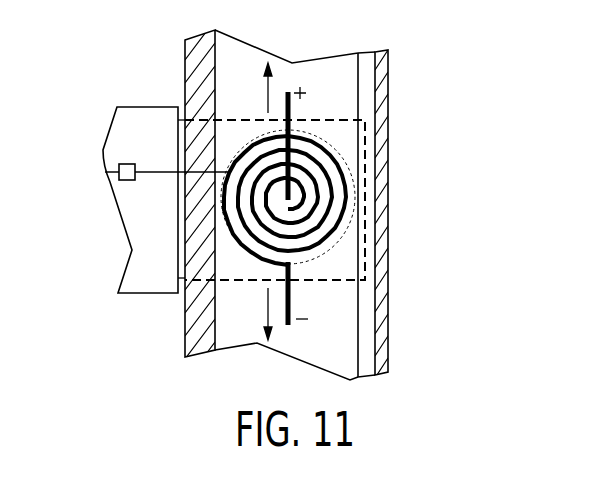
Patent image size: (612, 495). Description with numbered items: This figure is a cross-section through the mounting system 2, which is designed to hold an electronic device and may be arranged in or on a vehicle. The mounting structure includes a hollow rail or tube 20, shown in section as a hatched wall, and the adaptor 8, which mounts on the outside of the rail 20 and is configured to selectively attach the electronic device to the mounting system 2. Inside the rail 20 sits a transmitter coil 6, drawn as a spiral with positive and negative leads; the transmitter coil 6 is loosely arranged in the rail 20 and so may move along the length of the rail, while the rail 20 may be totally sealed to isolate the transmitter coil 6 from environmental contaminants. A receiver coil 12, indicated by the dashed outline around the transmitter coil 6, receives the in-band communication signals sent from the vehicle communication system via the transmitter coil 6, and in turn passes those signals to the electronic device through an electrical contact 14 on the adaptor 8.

The mounting system 2 is at (426, 105).
The transmitter coil 6 is at (330, 172).
The adaptor 8 is at (148, 126).
The receiver coil 12 is at (316, 259).
The electrical contact 14 is at (128, 182).
The rail 20 is at (185, 332).